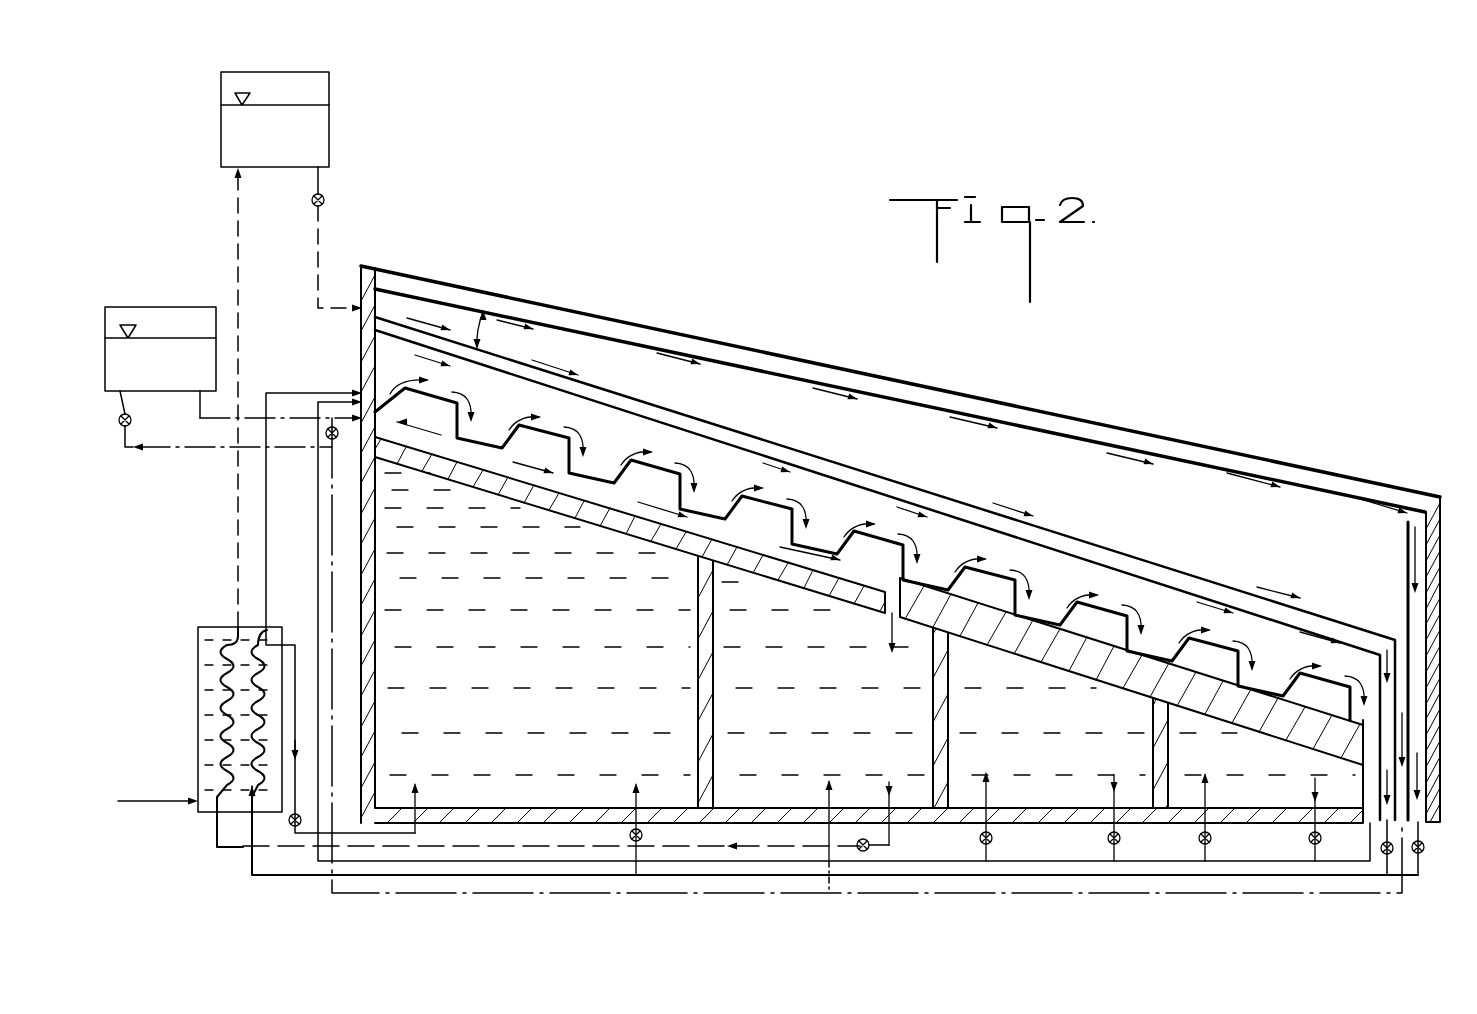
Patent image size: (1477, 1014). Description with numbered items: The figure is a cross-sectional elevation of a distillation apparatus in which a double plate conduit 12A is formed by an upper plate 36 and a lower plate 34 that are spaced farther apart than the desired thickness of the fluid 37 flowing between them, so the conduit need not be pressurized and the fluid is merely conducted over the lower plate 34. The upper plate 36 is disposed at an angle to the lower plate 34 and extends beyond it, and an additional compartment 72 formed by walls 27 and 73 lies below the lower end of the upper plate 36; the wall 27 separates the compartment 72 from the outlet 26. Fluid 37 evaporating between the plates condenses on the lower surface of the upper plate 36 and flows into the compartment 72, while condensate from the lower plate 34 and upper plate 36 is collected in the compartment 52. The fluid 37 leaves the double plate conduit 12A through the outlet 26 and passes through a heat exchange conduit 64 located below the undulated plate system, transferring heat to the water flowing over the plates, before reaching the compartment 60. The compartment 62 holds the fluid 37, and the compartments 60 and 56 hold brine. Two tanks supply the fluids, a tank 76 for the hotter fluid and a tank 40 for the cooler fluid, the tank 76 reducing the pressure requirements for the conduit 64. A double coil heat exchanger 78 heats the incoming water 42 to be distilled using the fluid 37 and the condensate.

The double plate conduit 12A is at (972, 389).
The upper plate 36 is at (857, 376).
The lower plate 34 is at (786, 456).
The fluid 37 is at (852, 459).
The heat exchange conduit 64 is at (598, 488).
The compartment 52 is at (531, 676).
The compartment 62 is at (818, 727).
The compartment 60 is at (1056, 762).
The compartment 56 is at (1266, 764).
The additional compartment 72 is at (1413, 683).
The wall 27 is at (1405, 718).
The outlet conduit 26 is at (1403, 772).
The wall 73 is at (1432, 824).
The tank 40 is at (322, 143).
The tank 76 is at (97, 317).
The double coil heat exchanger 78 is at (198, 690).
The water to be distilled 42 is at (146, 778).